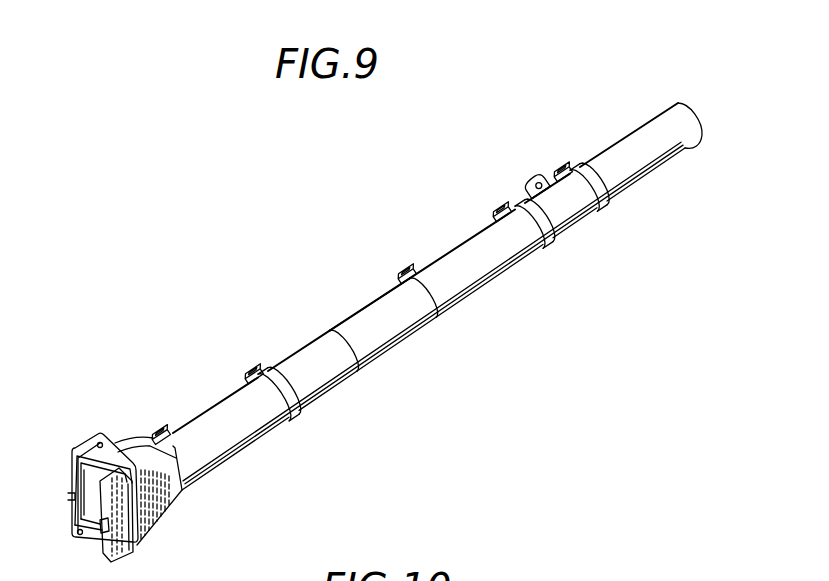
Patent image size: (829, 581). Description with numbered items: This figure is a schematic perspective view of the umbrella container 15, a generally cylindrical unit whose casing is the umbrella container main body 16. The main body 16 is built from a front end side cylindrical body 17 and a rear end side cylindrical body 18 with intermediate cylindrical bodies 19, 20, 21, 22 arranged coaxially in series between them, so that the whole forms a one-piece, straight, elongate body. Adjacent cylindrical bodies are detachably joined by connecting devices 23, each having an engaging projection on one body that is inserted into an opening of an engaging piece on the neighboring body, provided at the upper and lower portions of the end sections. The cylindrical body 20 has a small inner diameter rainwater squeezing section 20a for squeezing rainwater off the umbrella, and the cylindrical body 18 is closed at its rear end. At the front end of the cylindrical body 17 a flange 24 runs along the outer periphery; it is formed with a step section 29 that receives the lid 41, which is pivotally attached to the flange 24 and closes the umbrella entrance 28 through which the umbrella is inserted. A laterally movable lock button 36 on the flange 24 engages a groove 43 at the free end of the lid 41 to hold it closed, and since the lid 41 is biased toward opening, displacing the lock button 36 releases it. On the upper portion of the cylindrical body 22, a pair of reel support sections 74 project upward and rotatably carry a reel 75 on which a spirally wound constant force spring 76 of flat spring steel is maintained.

The umbrella container 15 is at (383, 187).
The umbrella container main body 16 is at (380, 294).
The front end side cylindrical body 17 is at (165, 498).
The rear end side cylindrical body 18 is at (623, 192).
The intermediate cylindrical body 19 is at (232, 458).
The intermediate cylindrical body 20 is at (400, 347).
The rainwater squeezing section 20a is at (325, 392).
The intermediate cylindrical body 21 is at (490, 283).
The intermediate cylindrical body 22 is at (560, 233).
The connecting device 23 is at (162, 428).
The flange 24 is at (85, 442).
The umbrella entrance 28 is at (93, 508).
The step section 29 is at (82, 477).
The lock button 36 is at (68, 497).
The lid 41 is at (110, 560).
The groove 43 is at (107, 523).
The reel support section 74 is at (548, 192).
The reel 75 is at (532, 203).
The constant force spring 76 is at (535, 177).